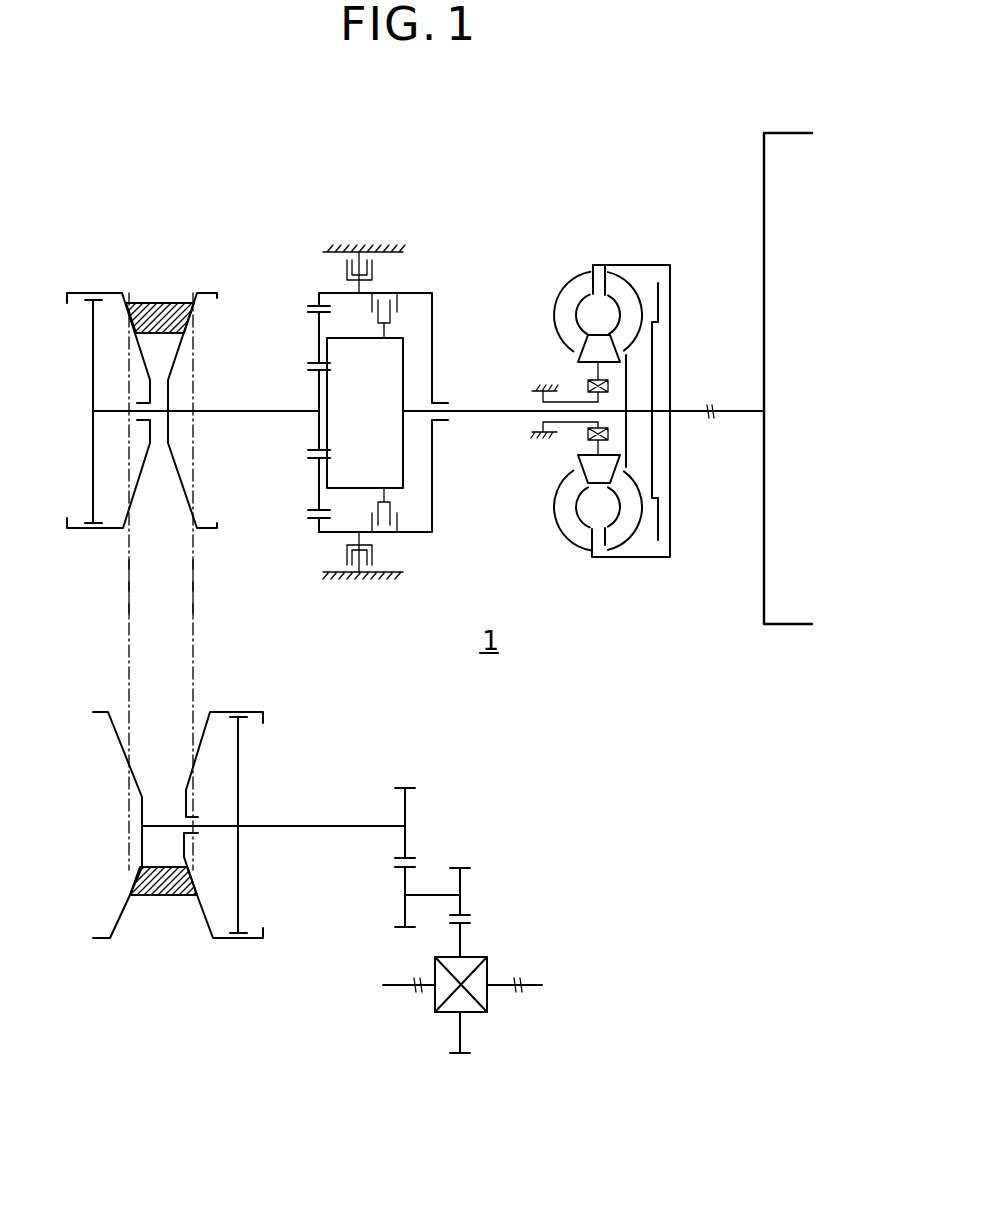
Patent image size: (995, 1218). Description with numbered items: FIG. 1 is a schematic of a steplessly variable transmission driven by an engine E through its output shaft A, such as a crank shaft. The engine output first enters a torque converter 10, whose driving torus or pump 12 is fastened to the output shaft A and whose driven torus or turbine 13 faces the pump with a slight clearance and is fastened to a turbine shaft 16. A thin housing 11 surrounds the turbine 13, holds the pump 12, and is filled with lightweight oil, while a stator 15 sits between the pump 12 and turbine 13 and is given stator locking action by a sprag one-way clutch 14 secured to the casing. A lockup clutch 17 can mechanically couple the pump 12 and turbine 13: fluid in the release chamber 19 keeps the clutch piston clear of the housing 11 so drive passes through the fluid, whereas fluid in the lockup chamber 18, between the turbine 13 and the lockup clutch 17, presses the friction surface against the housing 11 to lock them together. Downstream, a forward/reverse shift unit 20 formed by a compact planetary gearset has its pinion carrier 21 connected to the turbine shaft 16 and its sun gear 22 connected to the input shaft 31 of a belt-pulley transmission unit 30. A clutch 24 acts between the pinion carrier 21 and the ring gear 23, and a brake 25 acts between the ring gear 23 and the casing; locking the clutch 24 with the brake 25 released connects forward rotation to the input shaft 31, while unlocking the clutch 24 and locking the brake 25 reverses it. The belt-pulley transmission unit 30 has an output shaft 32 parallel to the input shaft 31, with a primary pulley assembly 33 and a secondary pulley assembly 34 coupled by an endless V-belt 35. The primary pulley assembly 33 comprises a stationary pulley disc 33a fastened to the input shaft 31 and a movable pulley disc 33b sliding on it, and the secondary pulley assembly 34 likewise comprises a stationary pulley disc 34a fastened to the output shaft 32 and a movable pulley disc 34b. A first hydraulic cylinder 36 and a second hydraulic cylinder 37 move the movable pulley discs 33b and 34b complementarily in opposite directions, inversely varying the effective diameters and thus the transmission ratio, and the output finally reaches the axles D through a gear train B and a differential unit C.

The torque converter 10 is at (585, 248).
The housing 11 is at (663, 262).
The pump 12 is at (567, 300).
The turbine 13 is at (617, 290).
The sprag one-way clutch 14 is at (587, 386).
The stator 15 is at (583, 364).
The turbine shaft 16 is at (490, 420).
The lockup clutch 17 is at (668, 298).
The lockup chamber 18 is at (636, 356).
The release chamber 19 is at (665, 384).
The forward/reverse shift unit 20 is at (455, 265).
The pinion carrier 21 is at (364, 340).
The sun gear 22 is at (316, 368).
The ring gear 23 is at (318, 302).
The clutch 24 is at (398, 306).
The brake 25 is at (372, 272).
The belt-pulley transmission unit 30 is at (207, 624).
The input shaft 31 is at (225, 415).
The output shaft 32 is at (325, 822).
The primary pulley assembly 33 is at (113, 250).
The stationary pulley disc 33a is at (190, 507).
The movable pulley disc 33b is at (128, 498).
The secondary pulley assembly 34 is at (253, 983).
The stationary pulley disc 34a is at (122, 927).
The movable pulley disc 34b is at (210, 927).
The endless V-belt 35 is at (155, 300).
The first hydraulic cylinder 36 is at (107, 348).
The second hydraulic cylinder 37 is at (228, 890).
The output shaft A is at (730, 415).
The gear train B is at (428, 850).
The differential unit C is at (480, 960).
The axles D is at (393, 990).
The engine E is at (762, 603).